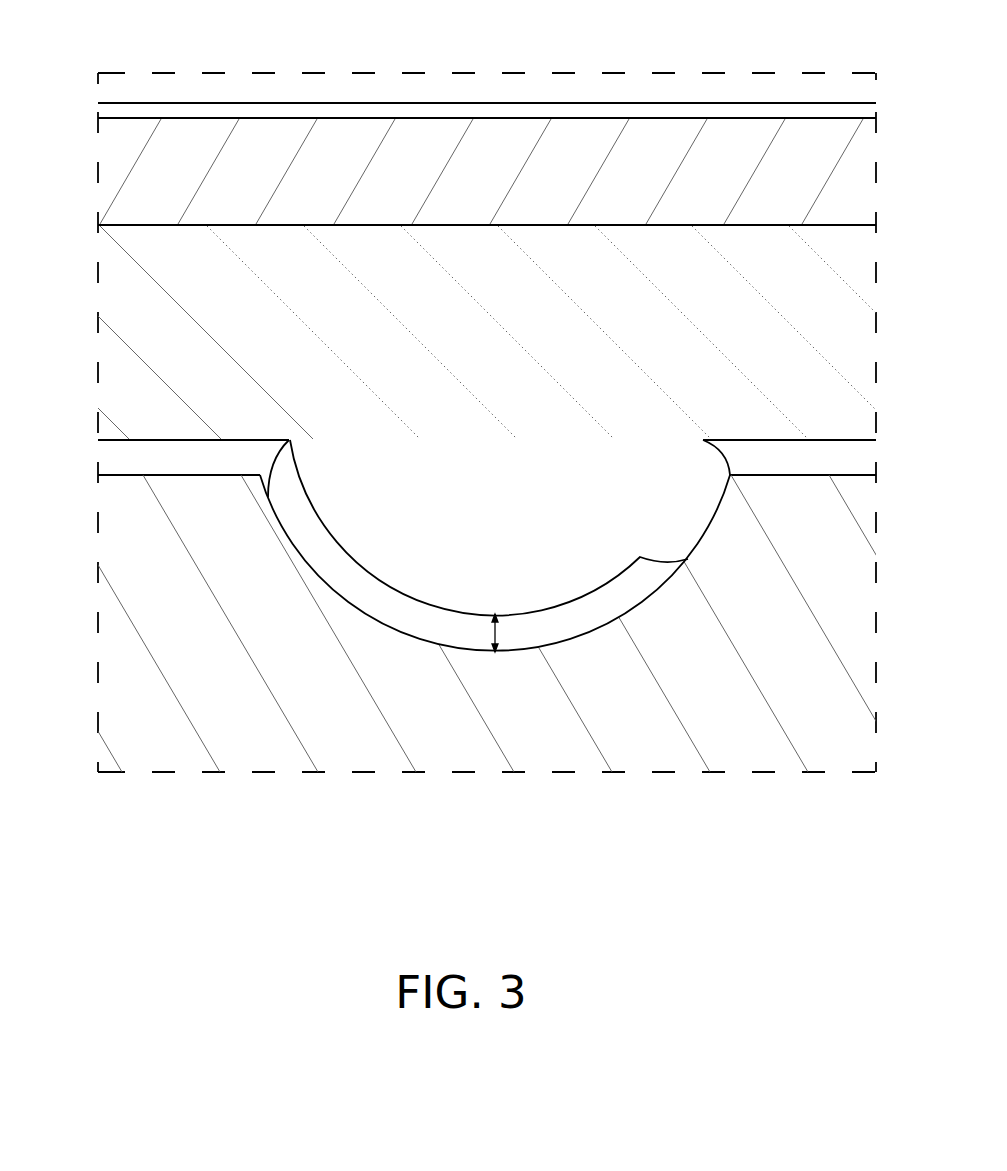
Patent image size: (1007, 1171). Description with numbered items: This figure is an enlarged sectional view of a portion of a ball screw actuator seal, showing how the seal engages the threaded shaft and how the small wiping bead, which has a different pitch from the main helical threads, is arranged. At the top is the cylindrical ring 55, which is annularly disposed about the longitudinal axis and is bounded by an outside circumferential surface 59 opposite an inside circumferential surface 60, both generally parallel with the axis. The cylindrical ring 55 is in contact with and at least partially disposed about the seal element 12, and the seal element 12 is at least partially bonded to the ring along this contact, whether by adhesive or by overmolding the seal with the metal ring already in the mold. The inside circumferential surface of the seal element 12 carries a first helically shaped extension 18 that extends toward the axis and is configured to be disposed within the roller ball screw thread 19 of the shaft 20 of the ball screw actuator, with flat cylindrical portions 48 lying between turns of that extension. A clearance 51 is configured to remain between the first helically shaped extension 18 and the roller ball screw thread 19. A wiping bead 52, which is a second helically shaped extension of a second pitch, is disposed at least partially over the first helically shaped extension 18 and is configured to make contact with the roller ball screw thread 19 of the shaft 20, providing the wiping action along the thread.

The seal element 12 is at (823, 317).
The first helically shaped extension 18 is at (438, 512).
The roller ball screw thread 19 is at (583, 640).
The shaft 20 is at (715, 713).
The flat cylindrical portions 48 is at (187, 438).
The clearance 51 is at (495, 636).
The wiping bead 52 is at (697, 493).
The cylindrical ring 55 is at (805, 178).
The outside circumferential surface 59 is at (450, 118).
The inside circumferential surface 60 is at (383, 225).